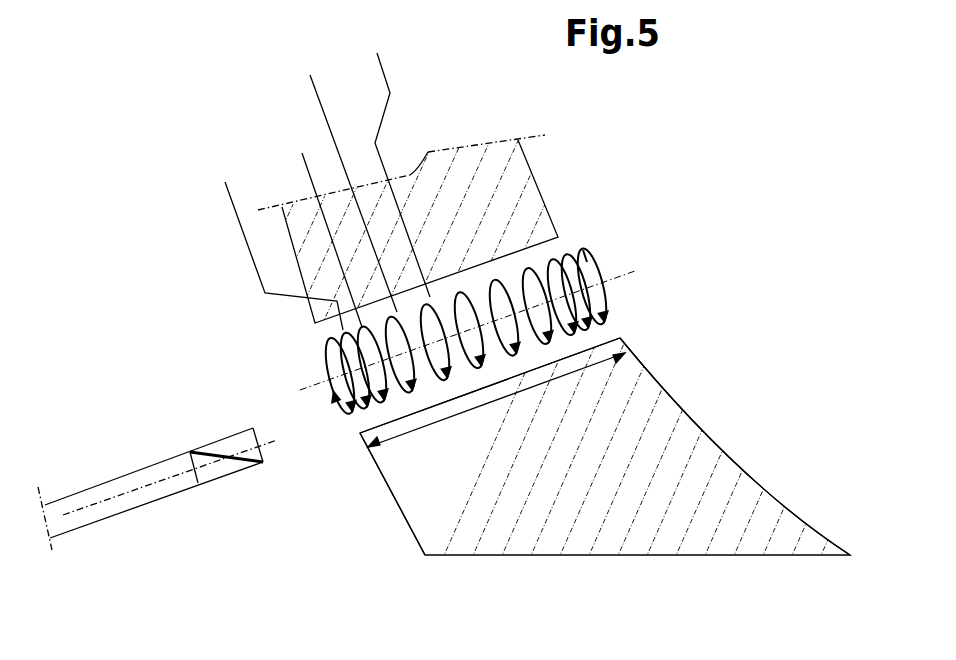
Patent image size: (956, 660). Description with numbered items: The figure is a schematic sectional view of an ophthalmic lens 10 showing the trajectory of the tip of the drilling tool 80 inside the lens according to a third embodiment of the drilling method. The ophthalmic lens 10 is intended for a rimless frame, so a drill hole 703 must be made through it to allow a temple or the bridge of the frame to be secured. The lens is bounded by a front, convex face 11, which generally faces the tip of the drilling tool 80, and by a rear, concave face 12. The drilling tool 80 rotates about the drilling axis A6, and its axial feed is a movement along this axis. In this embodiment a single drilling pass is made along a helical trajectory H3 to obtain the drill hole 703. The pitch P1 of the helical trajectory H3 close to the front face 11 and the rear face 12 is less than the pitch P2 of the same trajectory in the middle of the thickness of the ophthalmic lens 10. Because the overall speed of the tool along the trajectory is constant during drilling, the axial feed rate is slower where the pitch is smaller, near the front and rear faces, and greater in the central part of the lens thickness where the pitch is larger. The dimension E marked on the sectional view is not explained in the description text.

The ophthalmic lens 10 is at (420, 499).
The front face 11 is at (414, 537).
The rear face 12 is at (733, 458).
The drill hole 703 is at (583, 353).
The drilling tool 80 is at (172, 457).
The drilling axis A6 is at (107, 497).
The dimension E (length of top surface) E is at (488, 405).
The helical trajectory H3 is at (536, 268).
The pitch P1 is at (305, 163).
The pitch P2 is at (383, 68).